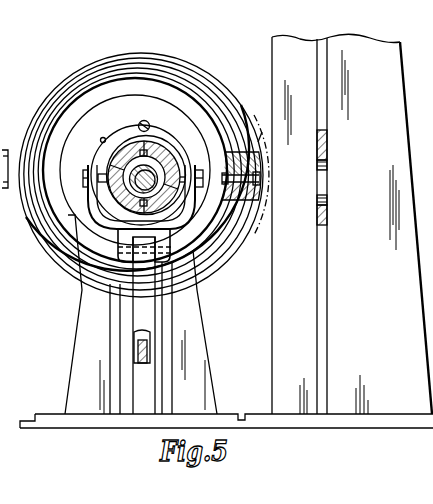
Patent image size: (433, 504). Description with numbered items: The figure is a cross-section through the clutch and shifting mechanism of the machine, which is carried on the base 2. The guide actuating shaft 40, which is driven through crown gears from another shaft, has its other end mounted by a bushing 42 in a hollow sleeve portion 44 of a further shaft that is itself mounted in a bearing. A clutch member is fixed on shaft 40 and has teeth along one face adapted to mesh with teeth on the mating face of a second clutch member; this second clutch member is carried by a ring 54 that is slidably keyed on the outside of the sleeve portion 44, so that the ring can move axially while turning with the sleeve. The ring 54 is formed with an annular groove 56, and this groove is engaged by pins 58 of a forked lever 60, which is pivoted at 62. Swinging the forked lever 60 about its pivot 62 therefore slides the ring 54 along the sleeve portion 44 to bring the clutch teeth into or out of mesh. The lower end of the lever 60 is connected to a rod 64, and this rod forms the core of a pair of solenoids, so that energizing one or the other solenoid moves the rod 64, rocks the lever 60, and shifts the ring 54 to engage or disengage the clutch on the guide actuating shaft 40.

The base 2 is at (127, 421).
The guide actuating shaft 40 is at (158, 145).
The bushing 42 is at (140, 162).
The hollow sleeve portion 44 is at (162, 152).
The ring 54 is at (125, 198).
The annular groove 56 is at (152, 150).
The pins 58 is at (97, 166).
The forked lever 60 is at (145, 317).
The pivot 62 is at (120, 262).
The rod 64 is at (145, 350).